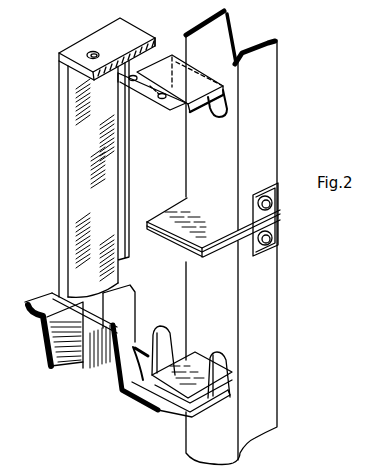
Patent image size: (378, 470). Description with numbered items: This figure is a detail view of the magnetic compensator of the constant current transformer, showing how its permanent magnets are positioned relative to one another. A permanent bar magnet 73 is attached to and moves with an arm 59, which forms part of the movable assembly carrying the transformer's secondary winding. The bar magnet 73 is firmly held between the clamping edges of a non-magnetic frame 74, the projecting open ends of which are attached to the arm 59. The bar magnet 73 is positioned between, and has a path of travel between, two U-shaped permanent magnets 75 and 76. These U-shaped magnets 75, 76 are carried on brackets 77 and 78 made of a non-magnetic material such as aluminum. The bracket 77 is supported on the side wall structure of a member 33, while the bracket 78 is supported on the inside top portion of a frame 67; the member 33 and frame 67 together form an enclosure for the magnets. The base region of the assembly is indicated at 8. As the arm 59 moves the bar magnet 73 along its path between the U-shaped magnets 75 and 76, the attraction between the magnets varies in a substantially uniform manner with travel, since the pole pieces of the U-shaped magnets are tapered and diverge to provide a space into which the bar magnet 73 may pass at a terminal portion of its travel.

The base plate 8 is at (33, 327).
The member 33 is at (136, 310).
The arm 59 is at (270, 318).
The frame 67 is at (58, 165).
The permanent bar magnet 73 is at (182, 214).
The non-magnetic frame 74 is at (280, 222).
The U-shaped permanent magnet 75 is at (173, 348).
The U-shaped permanent magnet 76 is at (208, 112).
The bracket 77 is at (186, 412).
The bracket 78 is at (143, 96).